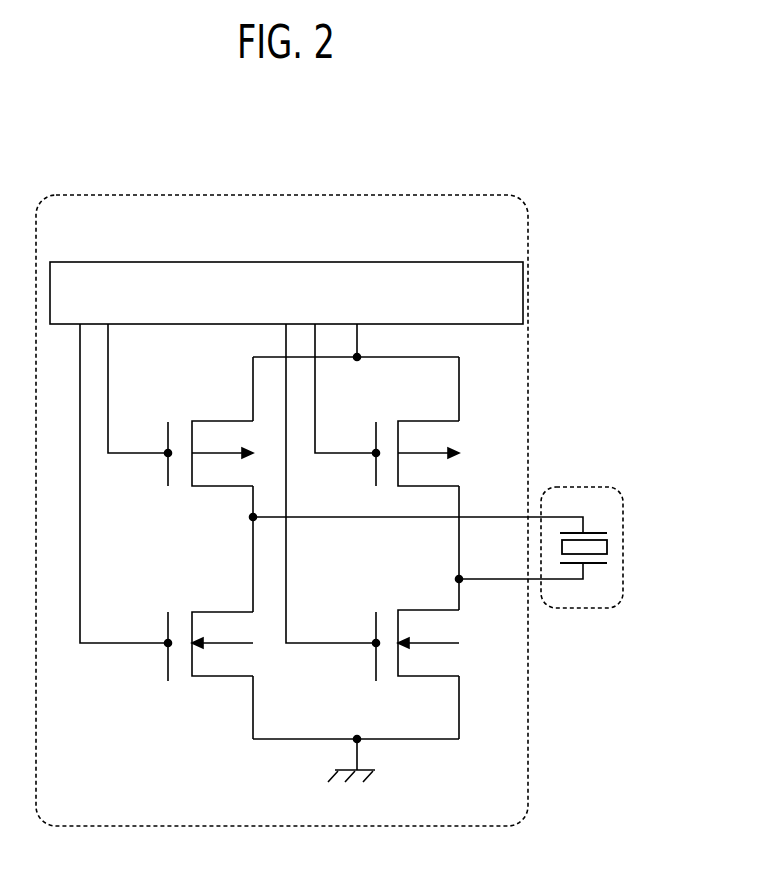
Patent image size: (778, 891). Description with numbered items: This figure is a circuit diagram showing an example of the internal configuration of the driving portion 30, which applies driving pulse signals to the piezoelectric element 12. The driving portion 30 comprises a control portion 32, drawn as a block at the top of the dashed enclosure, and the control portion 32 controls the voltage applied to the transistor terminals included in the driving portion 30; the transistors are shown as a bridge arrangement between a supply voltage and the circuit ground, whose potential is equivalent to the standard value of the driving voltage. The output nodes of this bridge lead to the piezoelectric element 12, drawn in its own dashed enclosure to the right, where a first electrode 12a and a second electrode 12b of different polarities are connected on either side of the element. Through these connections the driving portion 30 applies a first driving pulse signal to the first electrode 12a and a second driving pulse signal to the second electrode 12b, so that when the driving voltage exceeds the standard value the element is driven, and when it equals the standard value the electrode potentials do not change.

The driving portion 30 is at (263, 195).
The control portion 32 is at (100, 262).
The piezoelectric element 12 is at (573, 487).
The first electrode 12a is at (591, 532).
The second electrode 12b is at (593, 565).